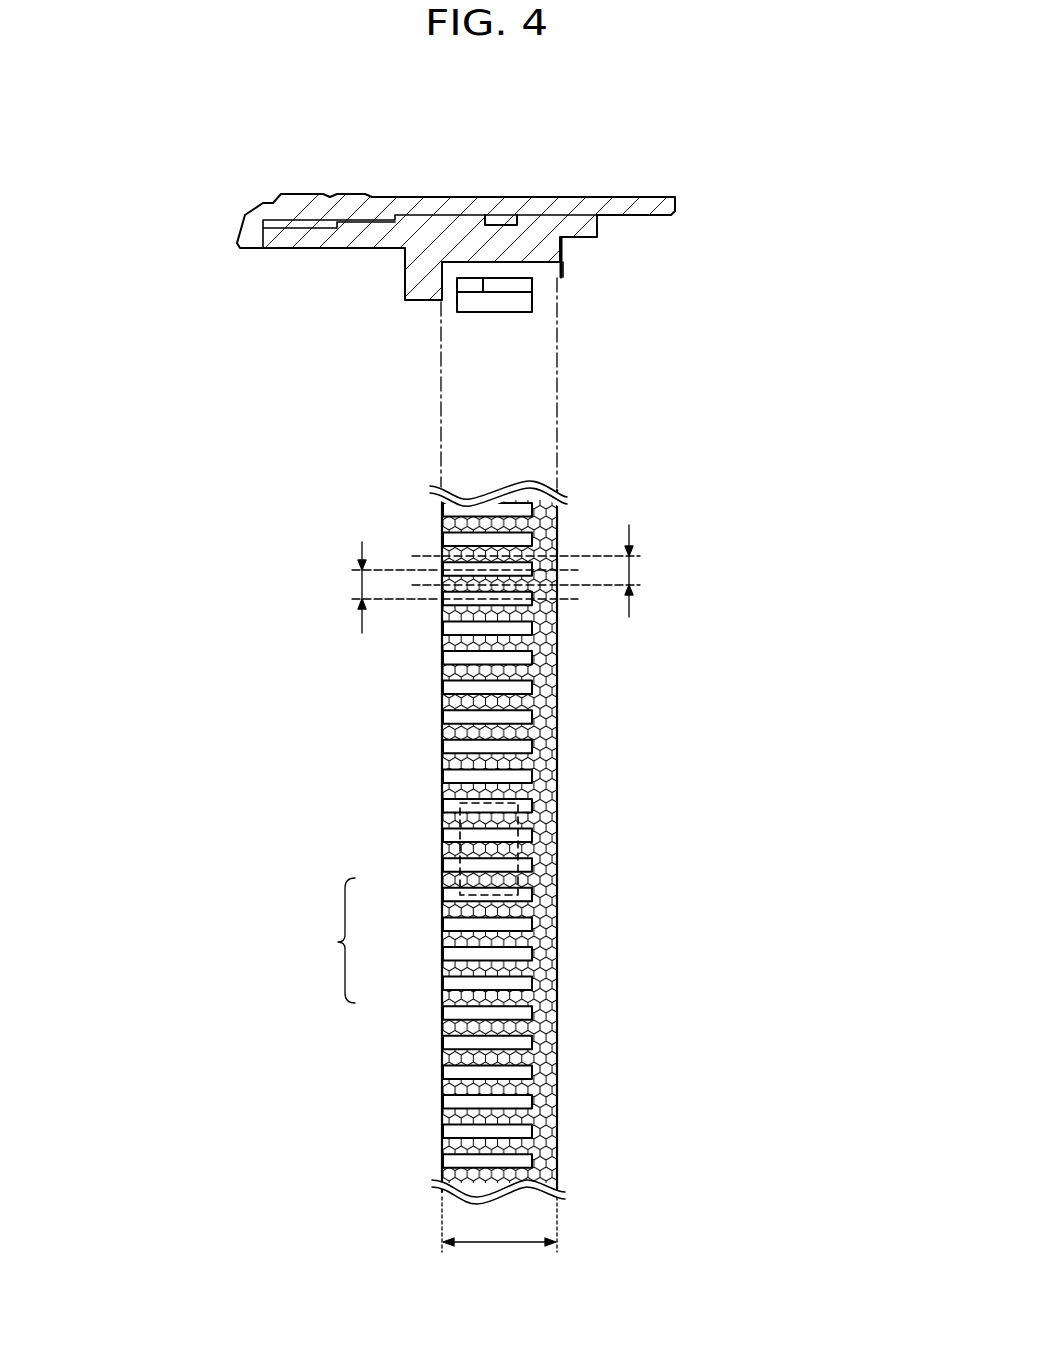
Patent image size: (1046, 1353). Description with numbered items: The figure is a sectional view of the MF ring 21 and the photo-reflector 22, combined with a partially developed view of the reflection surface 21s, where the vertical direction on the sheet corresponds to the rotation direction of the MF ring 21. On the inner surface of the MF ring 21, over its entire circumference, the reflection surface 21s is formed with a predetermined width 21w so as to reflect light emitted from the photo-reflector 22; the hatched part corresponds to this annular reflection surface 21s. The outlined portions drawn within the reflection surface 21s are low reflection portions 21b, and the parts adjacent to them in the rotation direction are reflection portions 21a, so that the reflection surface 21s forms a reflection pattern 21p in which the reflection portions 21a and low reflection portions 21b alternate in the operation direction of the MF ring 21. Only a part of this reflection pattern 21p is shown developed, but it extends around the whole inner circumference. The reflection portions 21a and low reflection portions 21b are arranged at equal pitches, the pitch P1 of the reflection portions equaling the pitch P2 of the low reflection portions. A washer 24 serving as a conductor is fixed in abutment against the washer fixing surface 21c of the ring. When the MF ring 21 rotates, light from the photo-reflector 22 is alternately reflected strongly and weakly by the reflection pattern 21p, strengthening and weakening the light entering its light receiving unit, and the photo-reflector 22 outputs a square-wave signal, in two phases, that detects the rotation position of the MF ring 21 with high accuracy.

The MF ring 21 is at (452, 242).
The reflection surface 21s is at (503, 260).
The reflection portion 21a is at (447, 913).
The low reflection portion 21b is at (445, 925).
The washer fixing surface 21c is at (567, 248).
The reflection pattern 21p is at (324, 940).
The predetermined width 21w is at (499, 1258).
The photo-reflector 22 is at (503, 300).
The washer 24 is at (567, 268).
The pitch of the reflection portions P1 is at (632, 570).
The pitch of the low reflection portions P2 is at (353, 583).